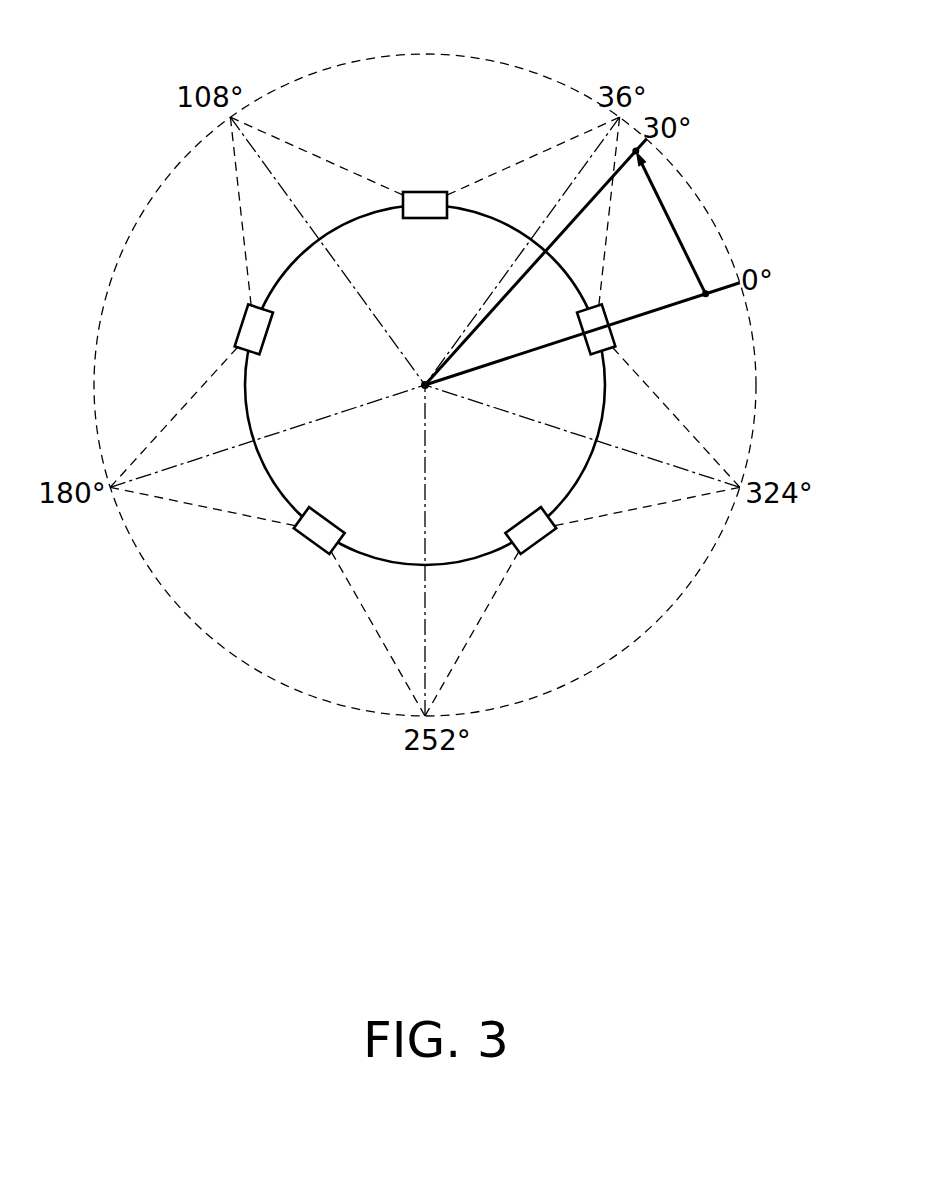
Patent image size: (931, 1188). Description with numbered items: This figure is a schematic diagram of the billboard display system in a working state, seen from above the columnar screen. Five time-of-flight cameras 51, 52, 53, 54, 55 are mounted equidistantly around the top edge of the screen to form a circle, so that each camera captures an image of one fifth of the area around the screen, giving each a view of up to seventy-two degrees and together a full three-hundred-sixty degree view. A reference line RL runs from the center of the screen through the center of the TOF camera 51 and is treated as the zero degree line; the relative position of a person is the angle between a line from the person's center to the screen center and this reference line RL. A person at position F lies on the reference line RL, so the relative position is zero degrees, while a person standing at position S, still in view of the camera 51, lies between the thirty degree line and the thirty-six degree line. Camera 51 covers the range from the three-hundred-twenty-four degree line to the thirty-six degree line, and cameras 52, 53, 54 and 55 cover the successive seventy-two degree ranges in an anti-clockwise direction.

The TOF camera 51 is at (605, 338).
The TOF camera 52 is at (422, 200).
The TOF camera 53 is at (248, 328).
The TOF camera 54 is at (315, 528).
The TOF camera 55 is at (533, 530).
The reference line RL is at (683, 302).
The position S is at (636, 151).
The position F is at (706, 293).